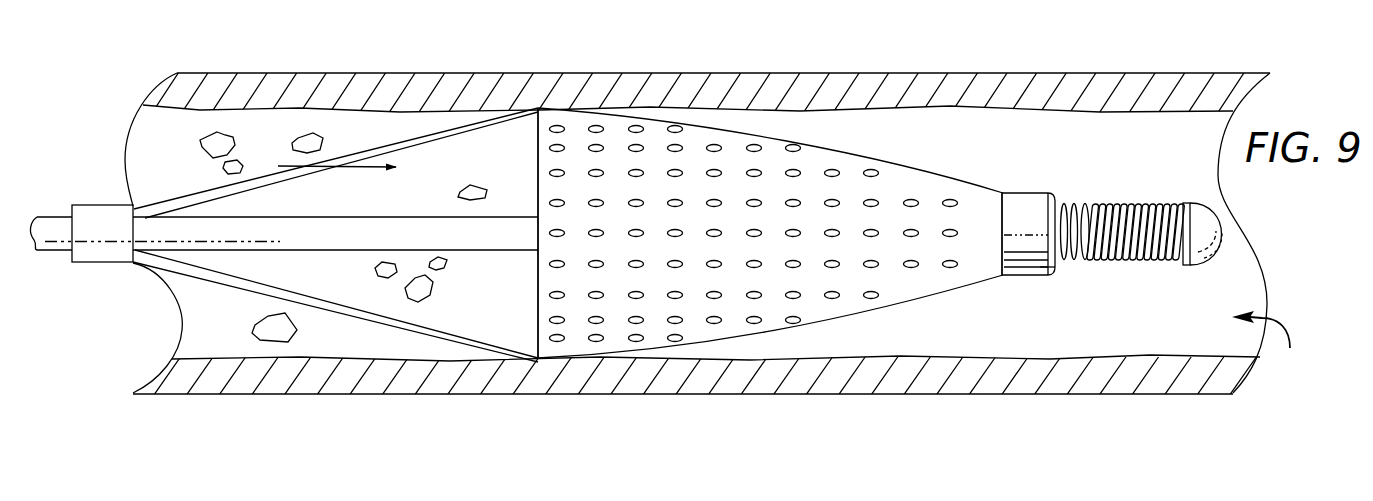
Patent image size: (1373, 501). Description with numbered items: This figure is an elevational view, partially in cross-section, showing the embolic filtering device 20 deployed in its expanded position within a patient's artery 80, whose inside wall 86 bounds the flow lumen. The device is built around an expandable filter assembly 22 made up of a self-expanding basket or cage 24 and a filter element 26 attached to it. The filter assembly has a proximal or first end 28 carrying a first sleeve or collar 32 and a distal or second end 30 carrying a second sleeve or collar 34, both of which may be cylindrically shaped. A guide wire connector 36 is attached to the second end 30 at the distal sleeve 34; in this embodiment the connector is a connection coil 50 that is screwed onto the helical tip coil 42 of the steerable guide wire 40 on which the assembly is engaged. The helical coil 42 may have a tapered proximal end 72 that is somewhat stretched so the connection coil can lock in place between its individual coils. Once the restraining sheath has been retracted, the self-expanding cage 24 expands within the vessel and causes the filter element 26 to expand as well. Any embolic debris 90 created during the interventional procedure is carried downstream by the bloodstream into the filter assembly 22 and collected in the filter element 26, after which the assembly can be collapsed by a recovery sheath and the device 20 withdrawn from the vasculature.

The embolic filtering device 20 is at (1271, 341).
The expandable filter assembly 22 is at (538, 102).
The self-expanding basket or cage 24 is at (395, 126).
The filter element 26 is at (813, 157).
The proximal or first end 28 is at (133, 264).
The distal or second end 30 is at (1003, 192).
The first sleeve or collar 32 is at (88, 262).
The second sleeve or collar 34 is at (1022, 192).
The guide wire connector 36 is at (1058, 266).
The guide wire 40 is at (58, 250).
The helical tip coil 42 is at (1150, 210).
The connection coil 50 is at (1075, 206).
The tapered proximal end 72 is at (1078, 257).
The artery 80 is at (302, 73).
The inside wall 86 is at (430, 103).
The embolic debris 90 is at (296, 138).